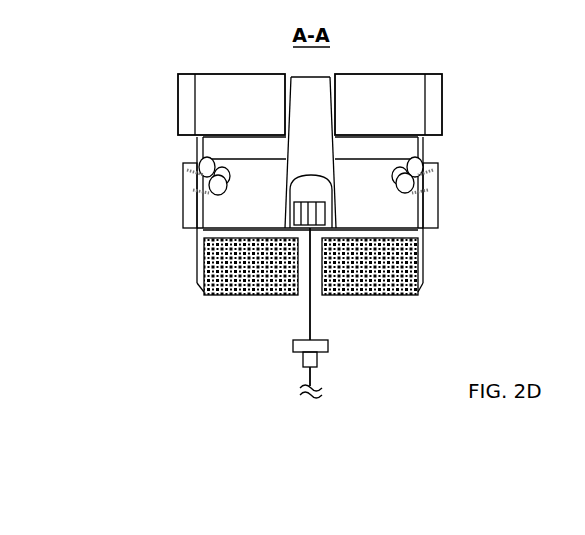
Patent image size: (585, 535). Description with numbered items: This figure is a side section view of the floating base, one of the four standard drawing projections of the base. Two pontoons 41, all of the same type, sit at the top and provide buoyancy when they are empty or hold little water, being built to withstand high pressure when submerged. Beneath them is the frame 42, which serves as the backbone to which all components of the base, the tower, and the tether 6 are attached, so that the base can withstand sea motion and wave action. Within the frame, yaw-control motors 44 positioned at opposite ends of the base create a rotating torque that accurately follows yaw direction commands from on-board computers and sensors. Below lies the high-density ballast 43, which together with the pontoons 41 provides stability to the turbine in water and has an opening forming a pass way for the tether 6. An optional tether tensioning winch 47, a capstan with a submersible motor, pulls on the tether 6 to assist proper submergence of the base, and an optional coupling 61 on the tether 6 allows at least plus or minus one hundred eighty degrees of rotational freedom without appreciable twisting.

The pontoon 41 is at (413, 85).
The frame 42 is at (197, 145).
The high-density ballast 43 is at (205, 280).
The yaw-control motor 44 is at (210, 195).
The tether tensioning winch 47 is at (325, 215).
The tether 6 is at (307, 378).
The coupling 61 is at (317, 342).